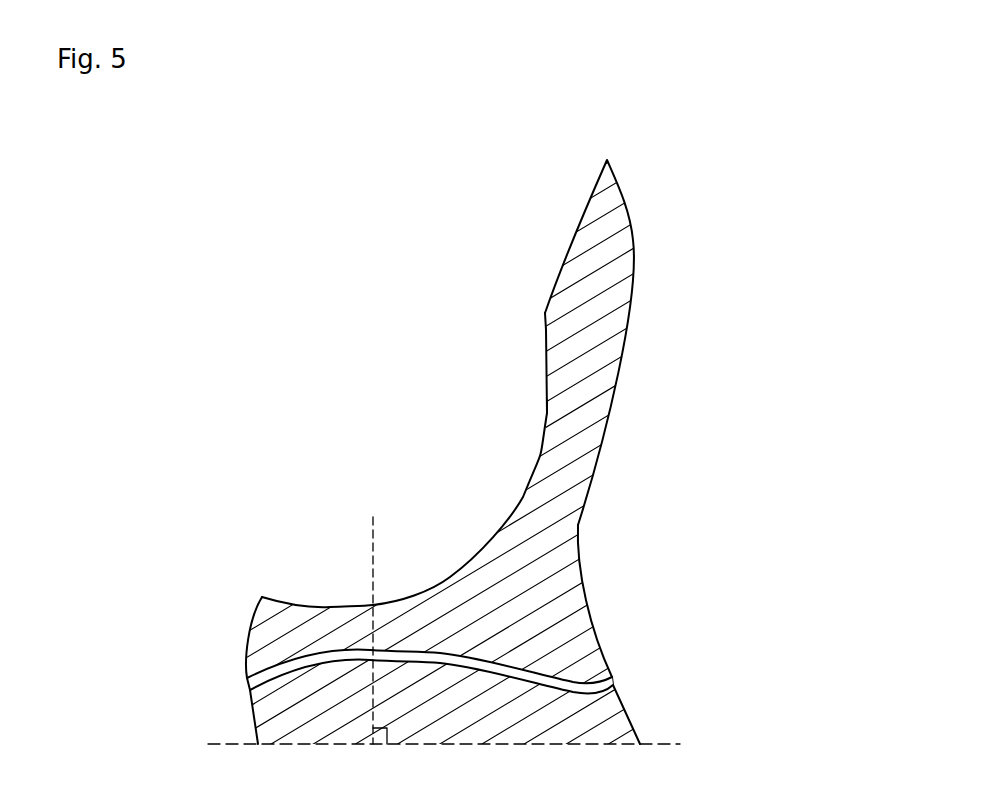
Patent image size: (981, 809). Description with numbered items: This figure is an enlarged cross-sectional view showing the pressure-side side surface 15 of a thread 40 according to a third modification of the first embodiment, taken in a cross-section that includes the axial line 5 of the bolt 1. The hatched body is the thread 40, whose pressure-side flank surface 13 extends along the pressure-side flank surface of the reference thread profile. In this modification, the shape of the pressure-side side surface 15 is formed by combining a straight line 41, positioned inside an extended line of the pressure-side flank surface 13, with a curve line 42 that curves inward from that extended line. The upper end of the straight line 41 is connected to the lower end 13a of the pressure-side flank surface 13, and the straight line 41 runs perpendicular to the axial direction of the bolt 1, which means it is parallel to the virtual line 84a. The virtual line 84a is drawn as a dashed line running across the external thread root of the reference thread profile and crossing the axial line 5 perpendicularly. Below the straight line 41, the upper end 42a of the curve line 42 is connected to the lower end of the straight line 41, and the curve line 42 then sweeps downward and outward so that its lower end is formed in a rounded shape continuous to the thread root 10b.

The bolt 1 is at (592, 655).
The axial line 5 is at (663, 744).
The thread root 10b is at (330, 604).
The pressure-side flank surface 13 is at (575, 236).
The lower end of the pressure-side flank surface 13a is at (542, 312).
The pressure-side side surface 15 is at (492, 350).
The thread 40 is at (402, 127).
The straight line 41 is at (531, 317).
The curve line 42 is at (330, 588).
The upper end of the curve line 42a is at (550, 409).
The virtual line 84a is at (368, 520).